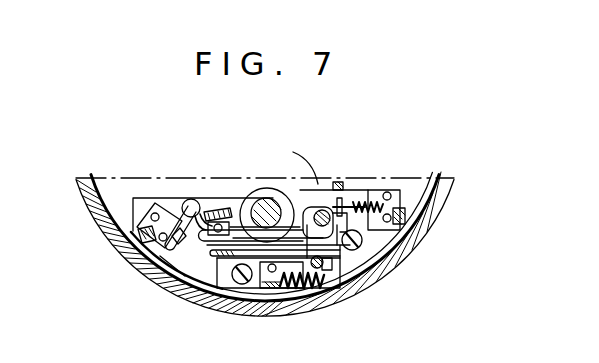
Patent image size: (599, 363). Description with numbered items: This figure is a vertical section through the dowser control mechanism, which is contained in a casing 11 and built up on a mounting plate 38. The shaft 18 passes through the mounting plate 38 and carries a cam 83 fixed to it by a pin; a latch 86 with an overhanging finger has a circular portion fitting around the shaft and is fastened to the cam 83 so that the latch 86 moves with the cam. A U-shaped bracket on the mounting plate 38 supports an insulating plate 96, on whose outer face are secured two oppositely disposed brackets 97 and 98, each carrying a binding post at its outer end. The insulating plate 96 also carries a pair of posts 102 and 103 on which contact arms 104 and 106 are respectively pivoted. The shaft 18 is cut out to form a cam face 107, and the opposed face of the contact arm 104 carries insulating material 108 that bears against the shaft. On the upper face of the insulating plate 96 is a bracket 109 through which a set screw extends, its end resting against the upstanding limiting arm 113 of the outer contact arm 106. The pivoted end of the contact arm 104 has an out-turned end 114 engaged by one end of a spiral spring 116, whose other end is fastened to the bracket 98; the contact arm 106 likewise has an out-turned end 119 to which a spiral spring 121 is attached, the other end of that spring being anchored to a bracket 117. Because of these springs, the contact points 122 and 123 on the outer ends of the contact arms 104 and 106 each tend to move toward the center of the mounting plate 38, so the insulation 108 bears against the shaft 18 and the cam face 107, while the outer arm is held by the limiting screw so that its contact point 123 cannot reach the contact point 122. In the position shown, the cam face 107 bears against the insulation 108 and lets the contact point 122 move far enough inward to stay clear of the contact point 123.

The casing 11 is at (84, 199).
The shaft 18 is at (268, 201).
The mounting plate 38 is at (412, 195).
The cam 83 is at (284, 193).
The latch 86 is at (341, 182).
The insulating plate 96 is at (196, 200).
The bracket 97 is at (137, 239).
The bracket 98 is at (405, 219).
The post 102 is at (317, 215).
The post 103 is at (351, 267).
The contact arm 104 is at (198, 212).
The contact arm 106 is at (202, 293).
The cam face 107 is at (288, 209).
The insulating material 108 is at (245, 229).
The bracket 109 is at (214, 215).
The limiting arm 113 is at (225, 260).
The out-turned end 114 is at (347, 202).
The spiral spring 116 is at (372, 201).
The bracket 117 is at (273, 290).
The out-turned end 119 is at (349, 271).
The spiral spring 121 is at (311, 271).
The contact point 122 is at (133, 260).
The contact point 123 is at (165, 280).